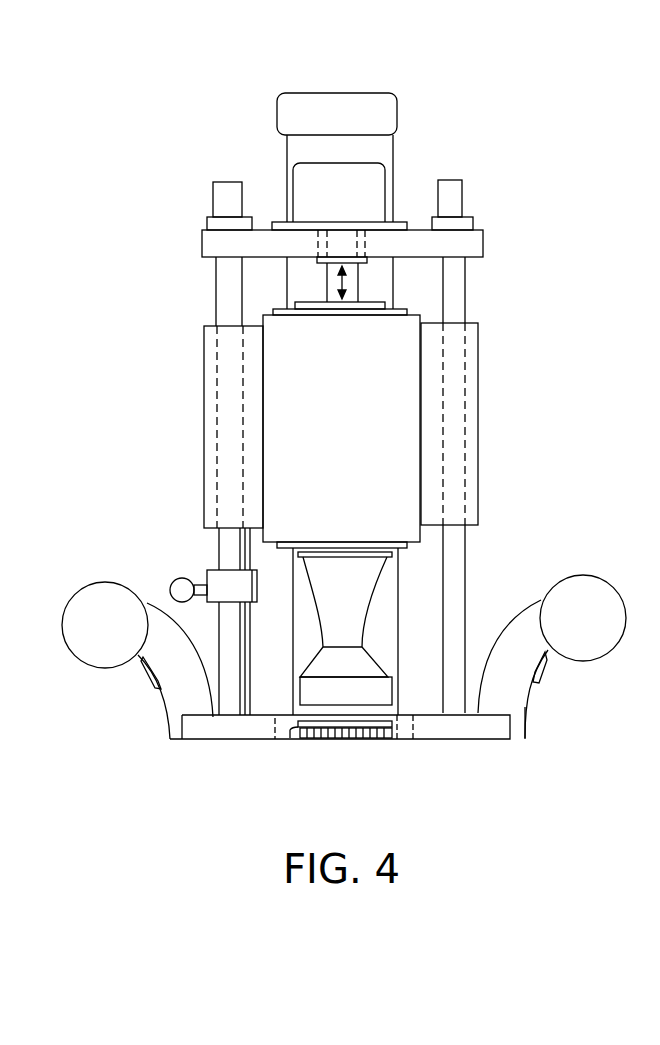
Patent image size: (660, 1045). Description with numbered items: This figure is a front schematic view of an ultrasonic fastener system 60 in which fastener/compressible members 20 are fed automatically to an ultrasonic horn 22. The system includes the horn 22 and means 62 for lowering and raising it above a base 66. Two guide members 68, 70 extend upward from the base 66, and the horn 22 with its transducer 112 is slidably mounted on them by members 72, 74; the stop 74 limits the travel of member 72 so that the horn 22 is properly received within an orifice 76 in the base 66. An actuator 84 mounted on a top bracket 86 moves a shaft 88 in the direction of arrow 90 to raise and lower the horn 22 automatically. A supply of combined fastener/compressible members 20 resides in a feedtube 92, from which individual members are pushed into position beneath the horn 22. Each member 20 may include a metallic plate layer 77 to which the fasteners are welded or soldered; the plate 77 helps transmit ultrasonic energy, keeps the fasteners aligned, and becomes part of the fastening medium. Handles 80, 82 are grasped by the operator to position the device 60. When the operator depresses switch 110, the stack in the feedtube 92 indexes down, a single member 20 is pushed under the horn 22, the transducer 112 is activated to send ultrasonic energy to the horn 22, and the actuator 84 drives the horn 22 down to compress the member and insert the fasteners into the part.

The fastener/compressible member 20 is at (331, 739).
The ultrasonic horn 22 is at (367, 625).
The ultrasonic fastener system 60 is at (518, 267).
The means for lowering and raising ultrasonic horn 62 is at (520, 432).
The base 66 is at (488, 725).
The guide member 68 is at (215, 295).
The guide member 70 is at (465, 300).
The member 72 is at (202, 407).
The stop 74 is at (478, 458).
The orifice 76 is at (410, 739).
The metallic plate layer 77 is at (302, 728).
The handle 80 is at (597, 575).
The handle 82 is at (100, 668).
The actuator 84 is at (324, 209).
The top bracket 86 is at (483, 243).
The shaft 88 is at (360, 287).
The arrow 90 is at (340, 282).
The feedtube 92 is at (393, 152).
The switch 110 is at (543, 677).
The transducer 112 is at (356, 421).